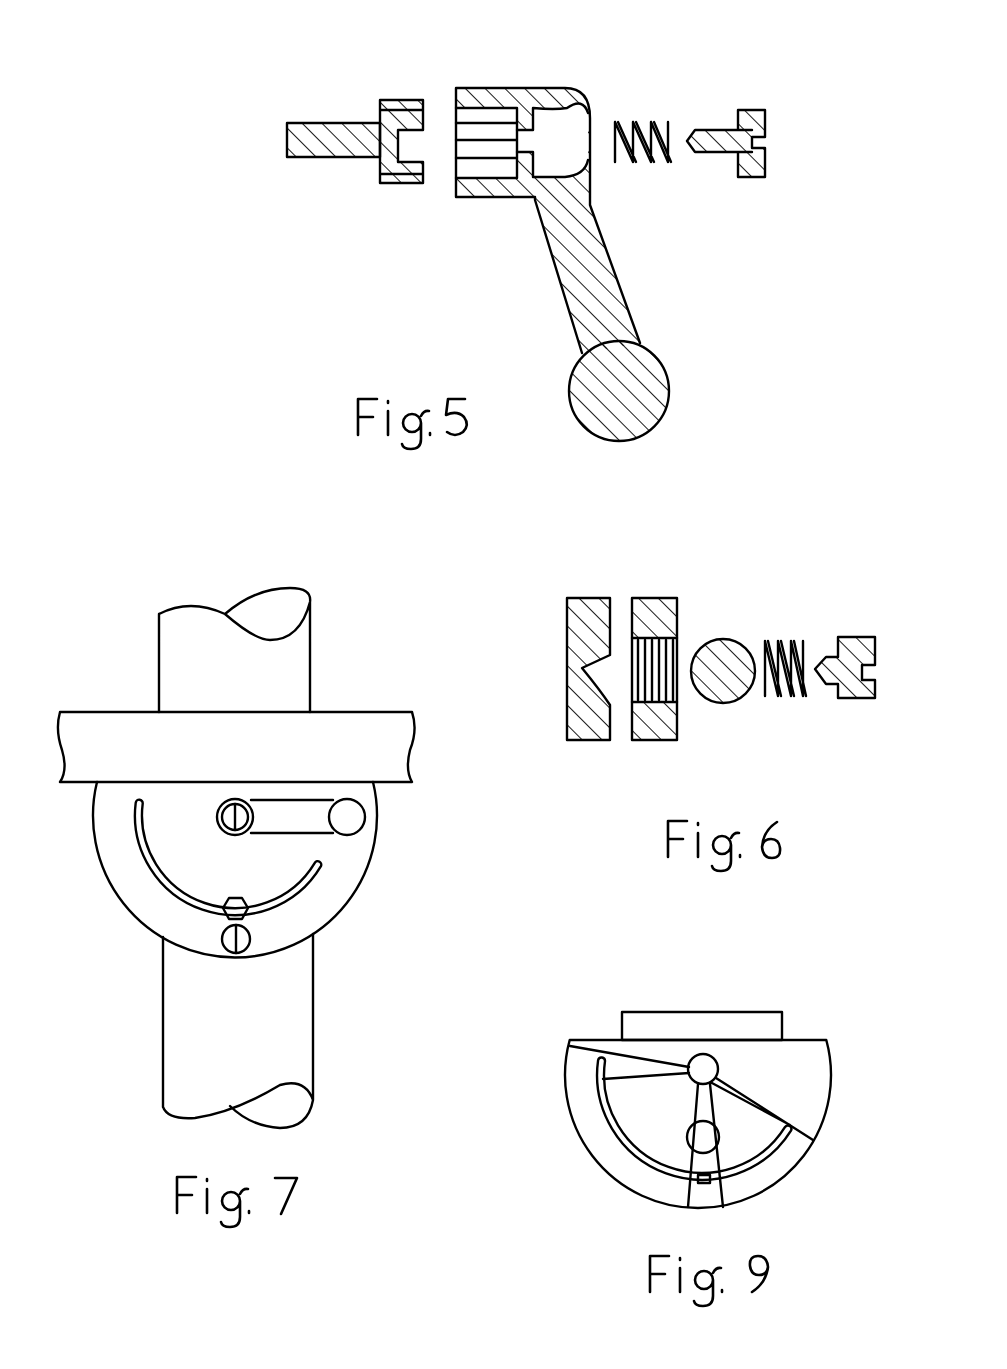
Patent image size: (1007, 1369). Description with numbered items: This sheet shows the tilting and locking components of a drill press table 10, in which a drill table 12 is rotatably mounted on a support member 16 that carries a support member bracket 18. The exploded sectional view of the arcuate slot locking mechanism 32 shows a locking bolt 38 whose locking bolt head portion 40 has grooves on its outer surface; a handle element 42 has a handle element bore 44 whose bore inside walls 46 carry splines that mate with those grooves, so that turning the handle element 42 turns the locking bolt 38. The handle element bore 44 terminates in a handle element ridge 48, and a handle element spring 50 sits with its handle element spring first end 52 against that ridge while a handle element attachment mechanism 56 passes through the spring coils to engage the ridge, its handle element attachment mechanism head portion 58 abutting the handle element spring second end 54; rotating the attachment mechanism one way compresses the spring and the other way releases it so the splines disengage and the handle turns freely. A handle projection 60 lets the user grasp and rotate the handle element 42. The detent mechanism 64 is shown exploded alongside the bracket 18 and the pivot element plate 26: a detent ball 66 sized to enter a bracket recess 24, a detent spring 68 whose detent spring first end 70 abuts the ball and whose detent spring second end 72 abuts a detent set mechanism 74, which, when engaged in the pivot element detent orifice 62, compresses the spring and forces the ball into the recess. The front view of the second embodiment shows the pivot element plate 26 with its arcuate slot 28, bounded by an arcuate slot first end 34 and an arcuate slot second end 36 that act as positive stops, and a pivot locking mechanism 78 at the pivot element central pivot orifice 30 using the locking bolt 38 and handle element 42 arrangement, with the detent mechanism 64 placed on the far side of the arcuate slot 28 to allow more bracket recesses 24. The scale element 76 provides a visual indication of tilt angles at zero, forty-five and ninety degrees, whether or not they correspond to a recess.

In FIG. 7, the drill press table 10 is at (256, 851).
In FIG. 7, the drill table 12 is at (378, 712).
In FIG. 7, the support member 16 is at (316, 632).
In FIG. 6, the support member bracket 18 is at (595, 659).
In FIG. 9, the support member bracket 18 is at (652, 1012).
In FIG. 6, the bracket recess 24 is at (612, 705).
In FIG. 6, the pivot element plate 26 is at (688, 637).
In FIG. 9, the pivot element plate 26 is at (698, 1092).
In FIG. 7, the arcuate slot 28 is at (139, 837).
In FIG. 9, the arcuate slot 28 is at (762, 1160).
In FIG. 9, the pivot element central pivot orifice 30 is at (703, 1054).
In FIG. 5, the arcuate slot locking mechanism 32 is at (517, 241).
In FIG. 7, the arcuate slot first end 34 is at (137, 806).
In FIG. 9, the arcuate slot first end 34 is at (597, 1062).
In FIG. 7, the arcuate slot second end 36 is at (324, 870).
In FIG. 9, the arcuate slot second end 36 is at (793, 1135).
In FIG. 5, the locking bolt 38 is at (296, 125).
In FIG. 5, the locking bolt head portion 40 is at (388, 135).
In FIG. 7, the locking bolt head portion 40 is at (226, 912).
In FIG. 5, the handle element 42 is at (637, 319).
In FIG. 7, the handle element 42 is at (276, 890).
In FIG. 5, the handle element bore 44 is at (510, 197).
In FIG. 5, the bore inside walls 46 is at (492, 150).
In FIG. 5, the handle element ridge 48 is at (586, 116).
In FIG. 5, the handle element spring 50 is at (632, 122).
In FIG. 5, the handle element spring first end 52 is at (644, 148).
In FIG. 5, the handle element spring second end 54 is at (740, 147).
In FIG. 5, the handle element attachment mechanism 56 is at (707, 204).
In FIG. 5, the handle element attachment mechanism head portion 58 is at (748, 177).
In FIG. 7, the handle element attachment mechanism head portion 58 is at (227, 830).
In FIG. 5, the handle projection 60 is at (638, 393).
In FIG. 7, the handle projection 60 is at (365, 816).
In FIG. 6, the pivot element detent orifice 62 is at (677, 650).
In FIG. 9, the pivot element detent orifice 62 is at (690, 1132).
In FIG. 6, the detent mechanism 64 is at (721, 628).
In FIG. 6, the detent ball 66 is at (723, 704).
In FIG. 6, the detent spring 68 is at (790, 641).
In FIG. 6, the detent spring first end 70 is at (783, 660).
In FIG. 6, the detent spring second end 72 is at (845, 668).
In FIG. 6, the detent set mechanism 74 is at (862, 637).
In FIG. 7, the detent set mechanism 74 is at (255, 934).
In FIG. 9, the scale element 76 is at (676, 1110).
In FIG. 7, the pivot locking mechanism 78 is at (247, 883).